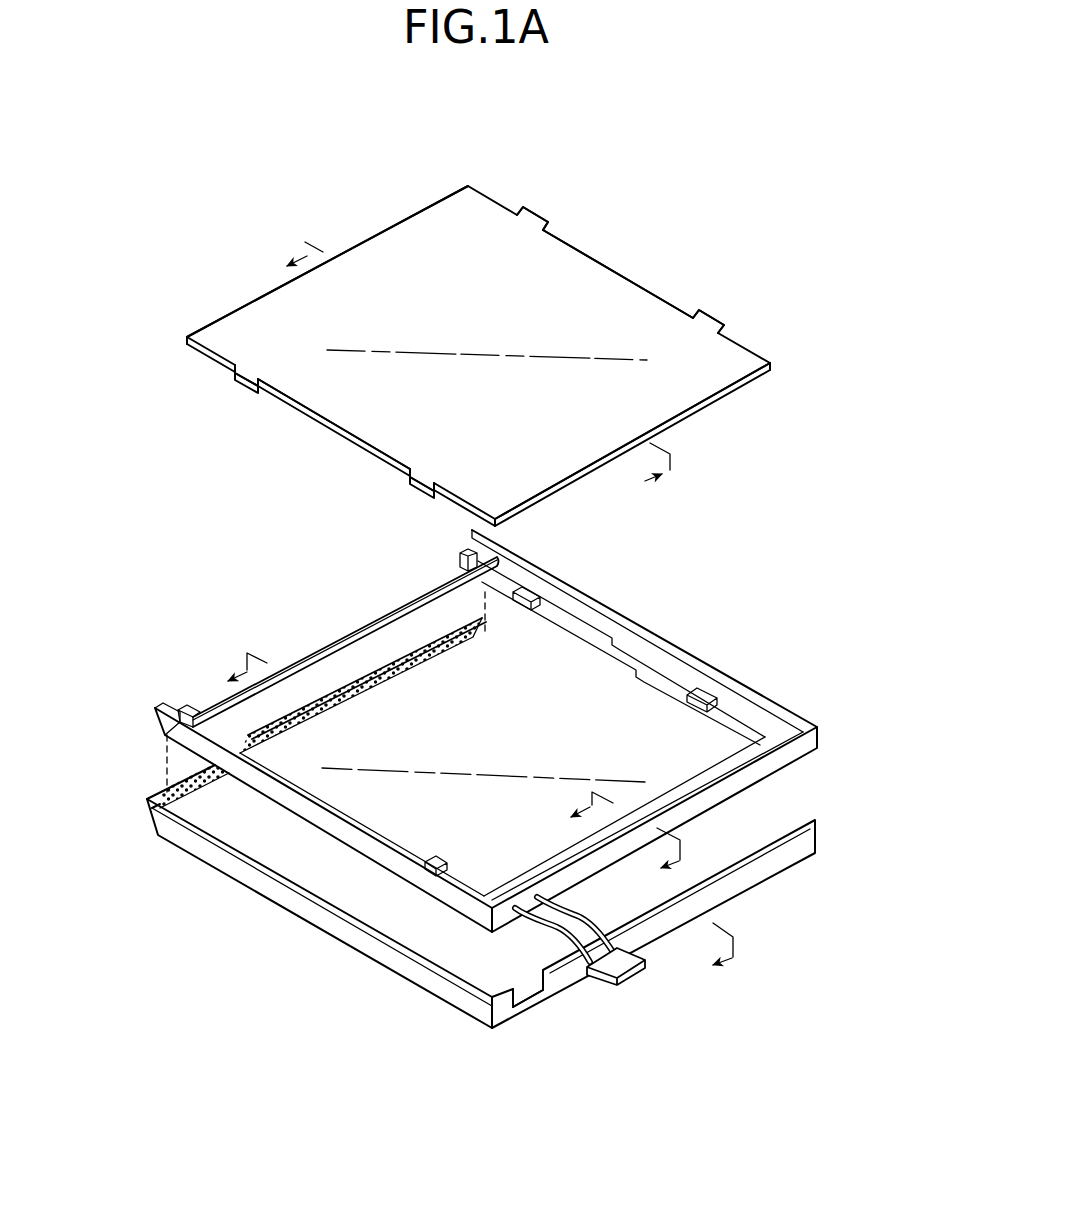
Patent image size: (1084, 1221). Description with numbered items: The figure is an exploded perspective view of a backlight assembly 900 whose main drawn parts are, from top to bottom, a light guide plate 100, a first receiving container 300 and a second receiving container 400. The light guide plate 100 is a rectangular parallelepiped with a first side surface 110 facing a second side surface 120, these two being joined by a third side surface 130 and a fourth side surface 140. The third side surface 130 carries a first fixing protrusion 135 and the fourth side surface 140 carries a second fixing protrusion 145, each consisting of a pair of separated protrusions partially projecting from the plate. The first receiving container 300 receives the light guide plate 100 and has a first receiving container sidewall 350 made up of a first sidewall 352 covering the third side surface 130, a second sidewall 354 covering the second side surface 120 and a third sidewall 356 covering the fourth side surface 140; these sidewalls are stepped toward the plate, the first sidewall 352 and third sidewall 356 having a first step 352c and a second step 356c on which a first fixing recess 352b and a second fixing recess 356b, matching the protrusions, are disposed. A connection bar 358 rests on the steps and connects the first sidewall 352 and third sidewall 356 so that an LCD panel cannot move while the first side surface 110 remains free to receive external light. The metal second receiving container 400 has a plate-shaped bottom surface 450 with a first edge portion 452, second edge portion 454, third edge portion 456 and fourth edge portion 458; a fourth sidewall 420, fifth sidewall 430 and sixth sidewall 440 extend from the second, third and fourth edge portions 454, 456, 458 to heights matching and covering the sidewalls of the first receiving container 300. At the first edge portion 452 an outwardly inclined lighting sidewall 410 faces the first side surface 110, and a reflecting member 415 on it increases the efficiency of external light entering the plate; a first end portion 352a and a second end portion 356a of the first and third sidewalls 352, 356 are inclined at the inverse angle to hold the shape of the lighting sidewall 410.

The backlight assembly 900 is at (780, 196).
The light guide plate 100 is at (760, 323).
The first side surface 110 is at (408, 214).
The second side surface 120 is at (710, 404).
The third side surface 130 is at (327, 424).
The first fixing protrusion 135 is at (410, 482).
The fourth side surface 140 is at (613, 268).
The second fixing protrusion 145 is at (550, 220).
The first receiving container 300 is at (803, 670).
The first receiving container sidewall 350 is at (618, 588).
The first sidewall 352 is at (359, 845).
The first end portion 352a is at (150, 722).
The first fixing recess 352b is at (424, 857).
The first step 352c is at (323, 768).
The second sidewall 354 is at (694, 812).
The third sidewall 356 is at (598, 637).
The second end portion 356a is at (458, 561).
The second fixing recess 356b is at (708, 692).
The second step 356c is at (568, 608).
The connection bar 358 is at (283, 651).
The second receiving container 400 is at (826, 806).
The lighting sidewall 410 is at (141, 797).
The reflecting member 415 is at (408, 666).
The fourth sidewall 420 is at (647, 934).
The fifth sidewall 430 is at (784, 830).
The sixth sidewall 440 is at (272, 893).
The bottom surface 450 is at (440, 950).
The first edge portion 452 is at (346, 690).
The second edge portion 454 is at (777, 827).
The third edge portion 456 is at (547, 995).
The fourth edge portion 458 is at (222, 876).